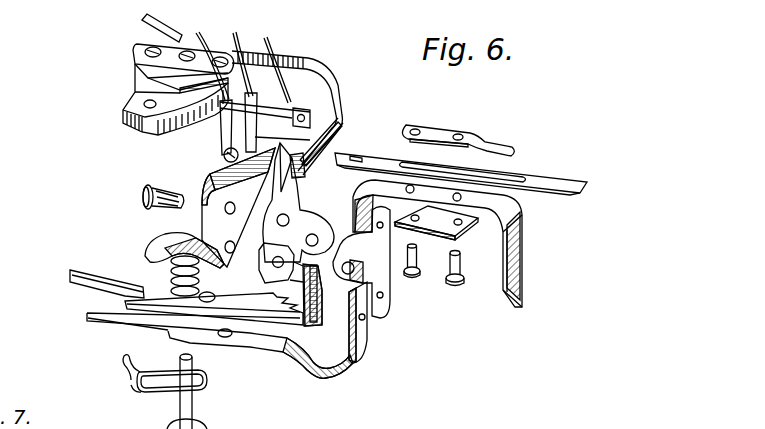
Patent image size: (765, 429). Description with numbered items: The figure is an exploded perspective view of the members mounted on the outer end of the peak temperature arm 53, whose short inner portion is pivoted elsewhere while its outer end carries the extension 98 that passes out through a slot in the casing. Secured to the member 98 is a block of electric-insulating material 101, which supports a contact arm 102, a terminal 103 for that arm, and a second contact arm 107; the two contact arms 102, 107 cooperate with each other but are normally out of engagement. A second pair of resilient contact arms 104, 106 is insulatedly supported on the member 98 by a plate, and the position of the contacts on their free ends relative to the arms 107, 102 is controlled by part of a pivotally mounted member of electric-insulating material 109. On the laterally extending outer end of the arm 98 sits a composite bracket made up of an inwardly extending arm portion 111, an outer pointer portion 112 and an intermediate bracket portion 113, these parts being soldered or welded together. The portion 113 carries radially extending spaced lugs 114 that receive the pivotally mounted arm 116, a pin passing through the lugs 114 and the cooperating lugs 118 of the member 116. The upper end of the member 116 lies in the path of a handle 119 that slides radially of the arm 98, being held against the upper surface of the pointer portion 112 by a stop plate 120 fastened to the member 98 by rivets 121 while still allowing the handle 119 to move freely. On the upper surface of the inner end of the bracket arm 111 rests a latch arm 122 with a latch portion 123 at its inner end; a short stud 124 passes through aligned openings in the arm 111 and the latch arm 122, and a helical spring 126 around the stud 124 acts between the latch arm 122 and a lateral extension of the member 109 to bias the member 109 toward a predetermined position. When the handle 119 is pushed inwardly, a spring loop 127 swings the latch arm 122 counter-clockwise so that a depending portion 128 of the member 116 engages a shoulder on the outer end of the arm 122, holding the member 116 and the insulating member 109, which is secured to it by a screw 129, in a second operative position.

The peak temperature arm 53 is at (80, 129).
The extension 98 is at (463, 227).
The block of electric-insulating material 101 is at (140, 78).
The contact arm 102 is at (333, 133).
The terminal 103 is at (167, 37).
The resilient contact arm 104 is at (225, 148).
The resilient contact arm 106 is at (250, 133).
The second contact arm 107 is at (312, 137).
The member of electric-insulating material 109 is at (155, 238).
The inwardly extending arm portion 111 is at (292, 367).
The outer pointer portion 112 is at (522, 252).
The intermediate bracket portion 113 is at (380, 315).
The radially extending spaced lugs 114 is at (357, 313).
The pivotally mounted arm 116 is at (298, 212).
The lugs of member 116 118 is at (265, 267).
The handle 119 is at (580, 193).
The stop plate 120 is at (473, 128).
The rivets 121 is at (449, 284).
The latch arm 122 is at (160, 322).
The latch portion 123 is at (67, 282).
The short stud 124 is at (192, 412).
The helical spring 126 is at (168, 277).
The spring loop 127 is at (165, 391).
The depending portion 128 is at (317, 327).
The screw 129 is at (143, 187).